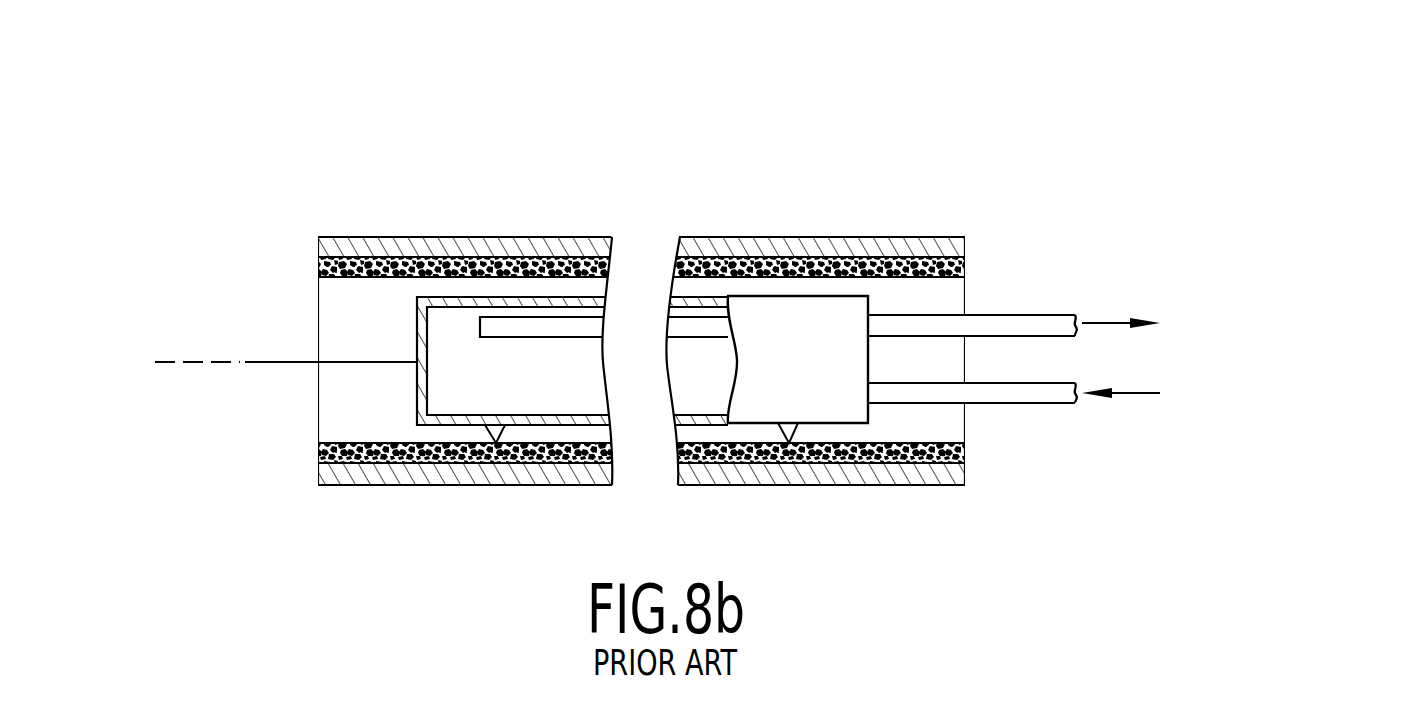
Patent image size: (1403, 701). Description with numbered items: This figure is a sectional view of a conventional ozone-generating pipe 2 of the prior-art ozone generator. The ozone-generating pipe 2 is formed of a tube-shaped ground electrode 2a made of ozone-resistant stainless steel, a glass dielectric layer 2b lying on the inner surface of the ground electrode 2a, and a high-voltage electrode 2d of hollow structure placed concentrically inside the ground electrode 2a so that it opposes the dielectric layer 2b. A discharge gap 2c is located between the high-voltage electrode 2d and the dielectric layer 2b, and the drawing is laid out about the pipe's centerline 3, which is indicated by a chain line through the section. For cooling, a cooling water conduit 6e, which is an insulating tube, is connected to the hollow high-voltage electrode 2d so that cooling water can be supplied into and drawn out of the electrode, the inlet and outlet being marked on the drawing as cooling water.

The ozone-generating pipe 2 is at (893, 196).
The ground electrode 2a is at (452, 250).
The glass dielectric layer 2b is at (322, 266).
The discharge gap 2c is at (781, 283).
The high-voltage electrode 2d is at (807, 385).
The axis 3 is at (208, 364).
The cooling water conduit 6e is at (1030, 390).